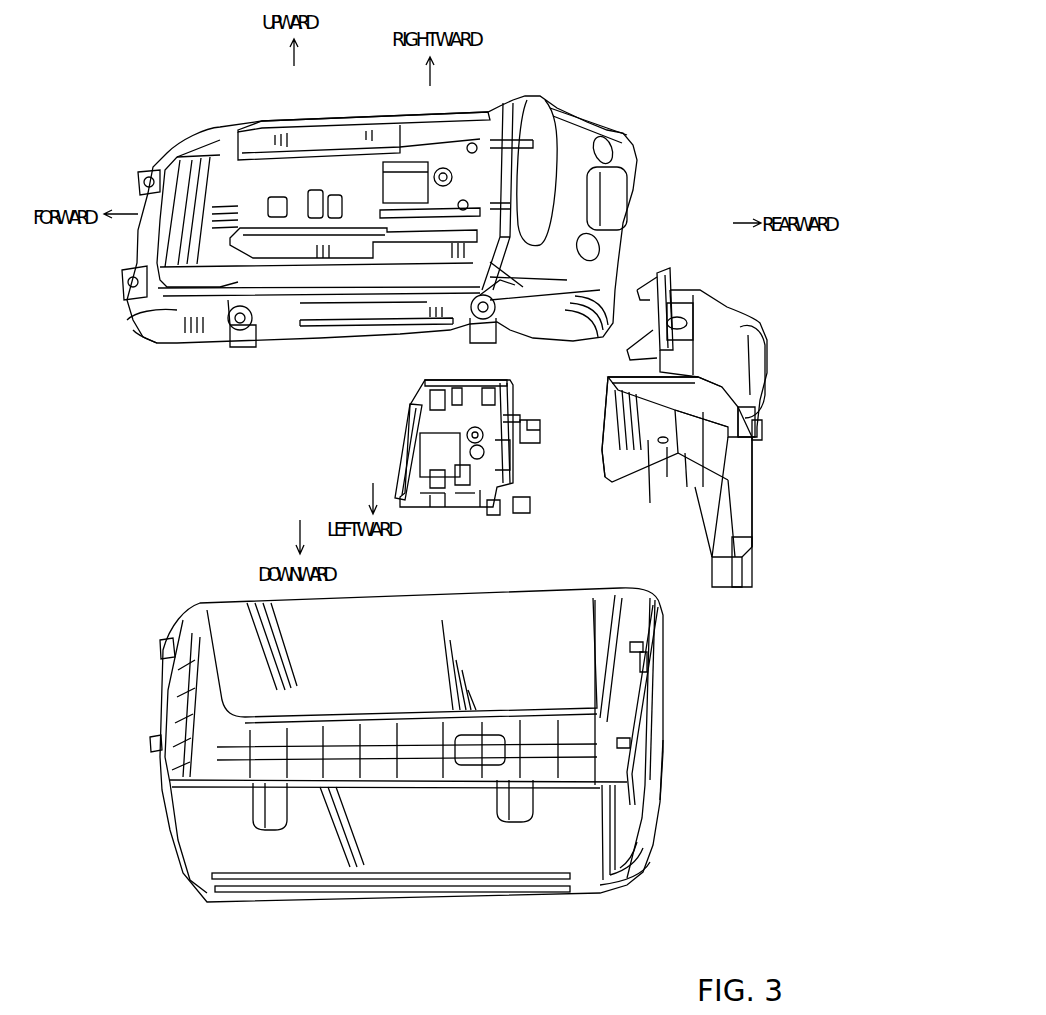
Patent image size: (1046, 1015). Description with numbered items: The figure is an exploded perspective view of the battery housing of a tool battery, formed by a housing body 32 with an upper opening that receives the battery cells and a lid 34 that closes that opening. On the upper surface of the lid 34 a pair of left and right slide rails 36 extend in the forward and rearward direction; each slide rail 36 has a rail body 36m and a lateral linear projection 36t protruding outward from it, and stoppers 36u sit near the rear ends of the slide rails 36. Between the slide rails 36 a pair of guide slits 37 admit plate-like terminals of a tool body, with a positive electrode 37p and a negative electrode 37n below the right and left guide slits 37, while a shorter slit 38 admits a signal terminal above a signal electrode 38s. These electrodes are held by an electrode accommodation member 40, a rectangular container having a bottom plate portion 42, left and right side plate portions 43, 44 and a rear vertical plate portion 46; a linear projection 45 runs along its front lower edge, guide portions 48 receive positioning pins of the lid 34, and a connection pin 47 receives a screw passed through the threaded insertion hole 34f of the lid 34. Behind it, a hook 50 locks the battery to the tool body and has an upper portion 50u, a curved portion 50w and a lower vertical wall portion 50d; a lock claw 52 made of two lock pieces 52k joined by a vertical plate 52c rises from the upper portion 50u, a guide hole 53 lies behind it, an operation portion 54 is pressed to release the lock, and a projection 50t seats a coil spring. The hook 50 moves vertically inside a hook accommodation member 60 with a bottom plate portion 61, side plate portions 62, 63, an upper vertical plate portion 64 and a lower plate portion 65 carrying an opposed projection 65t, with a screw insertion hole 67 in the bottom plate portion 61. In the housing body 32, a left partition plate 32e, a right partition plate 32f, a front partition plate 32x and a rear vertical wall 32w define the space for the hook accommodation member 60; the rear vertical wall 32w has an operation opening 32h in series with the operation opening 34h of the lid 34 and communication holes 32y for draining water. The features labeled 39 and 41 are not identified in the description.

The housing body 32 is at (175, 842).
The left partition plate 32e is at (593, 782).
The right partition plate 32f is at (623, 677).
The operation opening 32h is at (648, 677).
The rear vertical wall 32w is at (657, 713).
The front partition plate 32x is at (607, 707).
The communication holes 32y is at (672, 750).
The lid 34 is at (166, 356).
The threaded insertion hole 34f is at (443, 175).
The operation opening 34h is at (612, 185).
The slide rails 36 is at (366, 105).
The rail body 36m is at (320, 147).
The lateral linear projection 36t is at (316, 120).
The stoppers 36u is at (495, 310).
The guide slits 37 is at (452, 130).
The negative electrode 37n is at (463, 493).
The positive electrode 37p is at (488, 427).
The slit 38 is at (388, 170).
The signal electrode 38s is at (420, 415).
The raised portion 39 is at (528, 165).
The electrode accommodation member 40 is at (463, 497).
The tab 41 is at (528, 437).
The bottom plate portion 42 is at (437, 447).
The left side plate portion 43 is at (433, 497).
The right side plate portion 44 is at (462, 380).
The linear projection 45 is at (422, 430).
The rear vertical plate portion 46 is at (510, 382).
The connection pin 47 is at (500, 447).
The guide portions 48 is at (514, 417).
The hook 50 is at (706, 285).
The lower vertical wall portion 50d is at (742, 416).
The projection 50t is at (750, 432).
The upper portion 50u is at (614, 384).
The curved portion 50w is at (663, 442).
The lock claw 52 is at (673, 265).
The vertical plate 52c is at (670, 287).
The lock pieces 52k is at (653, 254).
The guide hole 53 is at (682, 322).
The operation portion 54 is at (757, 338).
The hook accommodation member 60 is at (667, 478).
The bottom plate portion 61 is at (650, 443).
The left side plate portion 62 is at (703, 490).
The right side plate portion 63 is at (752, 455).
The upper vertical plate portion 64 is at (598, 437).
The lower plate portion 65 is at (732, 582).
The projection 65t is at (748, 547).
The screw insertion hole 67 is at (686, 487).